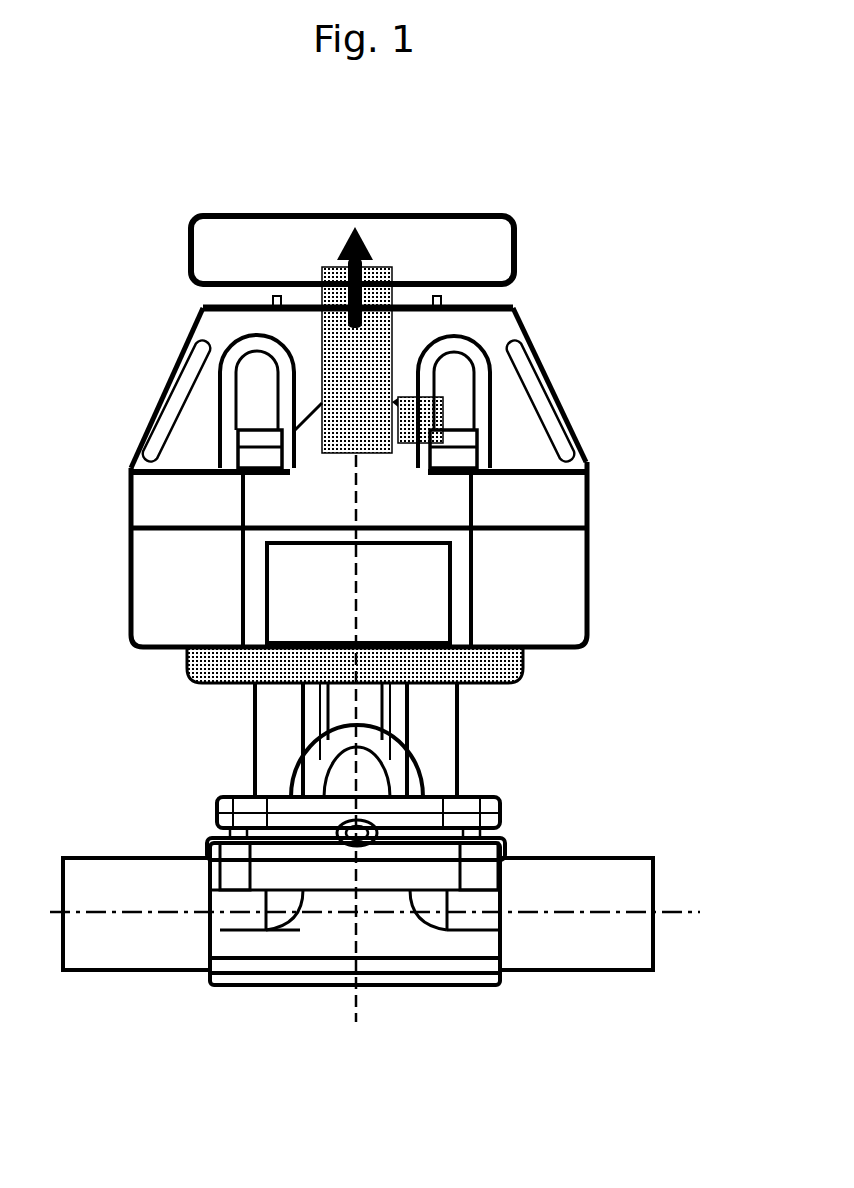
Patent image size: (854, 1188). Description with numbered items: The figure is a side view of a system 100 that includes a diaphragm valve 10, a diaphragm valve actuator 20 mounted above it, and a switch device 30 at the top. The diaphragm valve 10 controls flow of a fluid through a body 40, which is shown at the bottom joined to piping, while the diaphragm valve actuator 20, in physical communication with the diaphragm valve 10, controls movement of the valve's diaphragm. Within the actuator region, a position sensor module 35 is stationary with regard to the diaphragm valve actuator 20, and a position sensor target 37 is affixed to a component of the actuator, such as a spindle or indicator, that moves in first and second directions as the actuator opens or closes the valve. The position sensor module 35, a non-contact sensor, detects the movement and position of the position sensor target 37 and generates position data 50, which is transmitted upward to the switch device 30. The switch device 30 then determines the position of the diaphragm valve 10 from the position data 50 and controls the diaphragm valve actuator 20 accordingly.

The system 100 is at (375, 109).
The diaphragm valve 10 is at (375, 862).
The diaphragm valve actuator 20 is at (436, 455).
The switch device 30 is at (480, 248).
The position sensor module 35 is at (369, 371).
The position sensor target 37 is at (433, 430).
The body 40 is at (390, 913).
The position data 50 is at (354, 277).